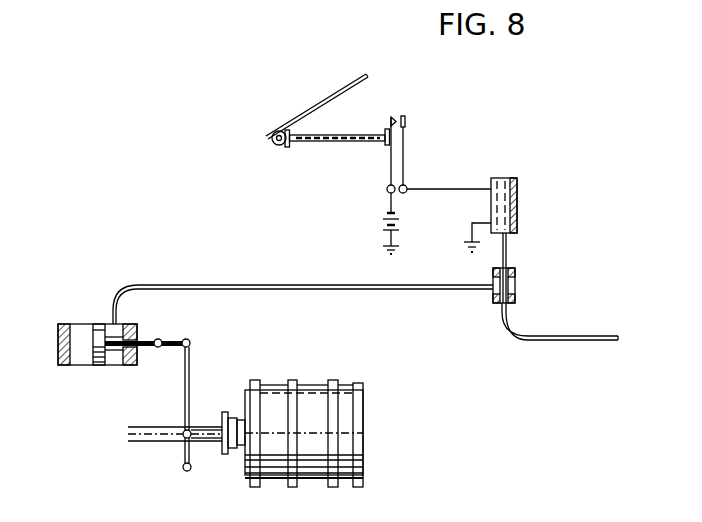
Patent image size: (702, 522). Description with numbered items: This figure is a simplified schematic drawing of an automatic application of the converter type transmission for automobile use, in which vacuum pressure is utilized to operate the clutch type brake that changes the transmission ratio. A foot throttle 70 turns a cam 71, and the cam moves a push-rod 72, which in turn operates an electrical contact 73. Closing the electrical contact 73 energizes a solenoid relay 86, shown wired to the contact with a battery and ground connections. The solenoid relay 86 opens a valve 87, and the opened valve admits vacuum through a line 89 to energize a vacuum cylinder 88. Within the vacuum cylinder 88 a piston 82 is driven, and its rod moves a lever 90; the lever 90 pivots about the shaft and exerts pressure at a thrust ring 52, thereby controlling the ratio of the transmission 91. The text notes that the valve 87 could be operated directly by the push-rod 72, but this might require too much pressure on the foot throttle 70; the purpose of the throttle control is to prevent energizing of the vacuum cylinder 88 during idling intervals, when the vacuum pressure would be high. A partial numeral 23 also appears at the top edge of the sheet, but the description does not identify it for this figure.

The reference from adjacent figure 23 is at (237, 0).
The foot throttle 70 is at (290, 125).
The cam 71 is at (276, 145).
The push-rod 72 is at (353, 136).
The electrical contact 73 is at (406, 128).
The solenoid relay 86 is at (525, 176).
The valve 87 is at (530, 294).
The vacuum cylinder 88 is at (81, 326).
The fluid supply line 89 is at (611, 334).
The piston 82 is at (158, 339).
The lever 90 is at (191, 372).
The thrust ring 52 is at (224, 416).
The transmission 91 is at (305, 386).